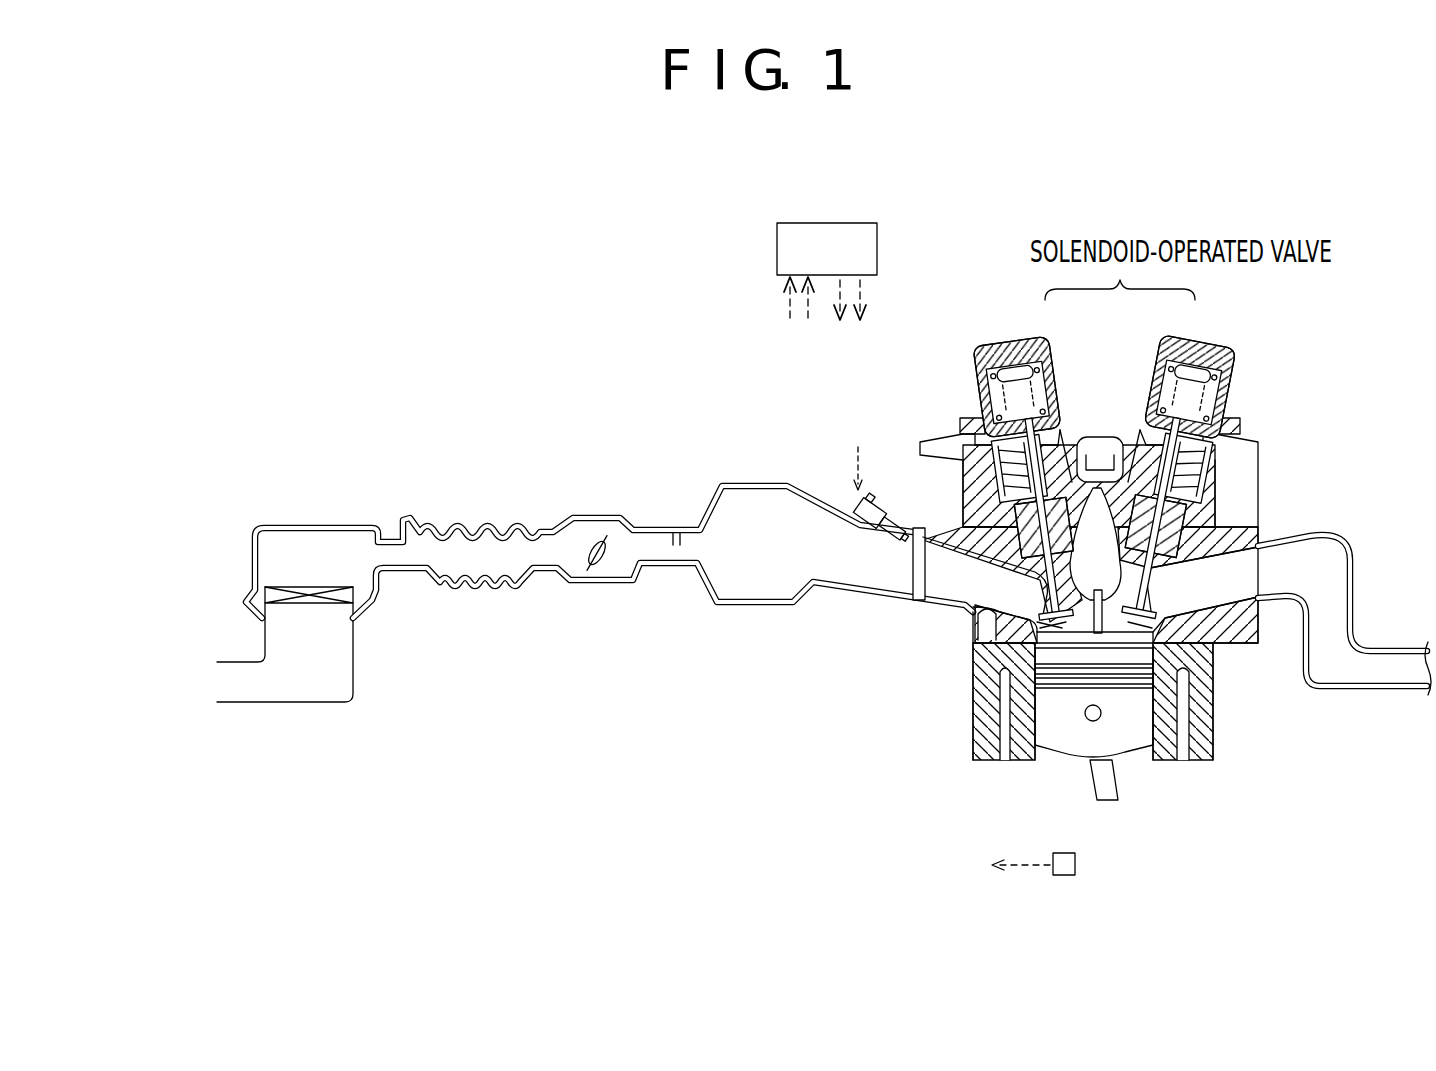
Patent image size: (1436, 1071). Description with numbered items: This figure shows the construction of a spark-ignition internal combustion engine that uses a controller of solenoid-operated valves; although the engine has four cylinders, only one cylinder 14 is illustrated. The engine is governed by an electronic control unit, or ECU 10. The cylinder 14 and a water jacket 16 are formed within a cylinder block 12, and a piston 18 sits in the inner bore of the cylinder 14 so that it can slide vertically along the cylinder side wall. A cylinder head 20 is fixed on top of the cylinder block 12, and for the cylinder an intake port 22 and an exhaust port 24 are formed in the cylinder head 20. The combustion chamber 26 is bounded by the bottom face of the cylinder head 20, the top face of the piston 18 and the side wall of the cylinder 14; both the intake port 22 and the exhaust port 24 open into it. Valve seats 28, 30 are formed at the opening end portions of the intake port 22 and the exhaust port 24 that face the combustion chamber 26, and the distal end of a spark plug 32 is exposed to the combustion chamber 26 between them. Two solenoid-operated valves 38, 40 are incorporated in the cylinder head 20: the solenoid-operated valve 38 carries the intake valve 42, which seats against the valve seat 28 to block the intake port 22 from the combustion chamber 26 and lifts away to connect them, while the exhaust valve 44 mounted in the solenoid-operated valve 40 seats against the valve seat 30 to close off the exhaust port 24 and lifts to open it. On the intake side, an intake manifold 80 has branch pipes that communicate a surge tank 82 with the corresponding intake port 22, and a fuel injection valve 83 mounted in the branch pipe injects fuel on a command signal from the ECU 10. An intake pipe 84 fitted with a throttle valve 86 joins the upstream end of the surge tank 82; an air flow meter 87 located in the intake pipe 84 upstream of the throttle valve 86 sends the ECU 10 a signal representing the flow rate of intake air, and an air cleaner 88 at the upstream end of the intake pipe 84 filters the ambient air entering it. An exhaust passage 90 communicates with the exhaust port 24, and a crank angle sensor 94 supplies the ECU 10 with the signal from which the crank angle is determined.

The electronic control unit (ECU) 10 is at (877, 250).
The cylinder block 12 is at (1215, 745).
The cylinder 14 is at (1133, 748).
The water jacket 16 is at (990, 745).
The piston 18 is at (1055, 745).
The cylinder head 20 is at (975, 622).
The intake port 22 is at (950, 606).
The exhaust port 24 is at (1237, 573).
The combustion chamber 26 is at (1213, 745).
The valve seat 28 is at (997, 652).
The valve seat 30 is at (1180, 657).
The spark plug 32 is at (1096, 440).
The solenoid-operated valve 38 is at (1057, 383).
The solenoid-operated valve 40 is at (1146, 383).
The intake valve 42 is at (1003, 668).
The exhaust valve 44 is at (1188, 740).
The intake manifold 80 is at (836, 586).
The surge tank 82 is at (774, 482).
The fuel injection valve 83 is at (880, 504).
The intake pipe 84 is at (668, 570).
The throttle valve 86 is at (597, 568).
The air flow meter 87 is at (440, 528).
The air cleaner 88 is at (313, 523).
The exhaust passage 90 is at (1318, 560).
The crank angle sensor 94 is at (1078, 865).